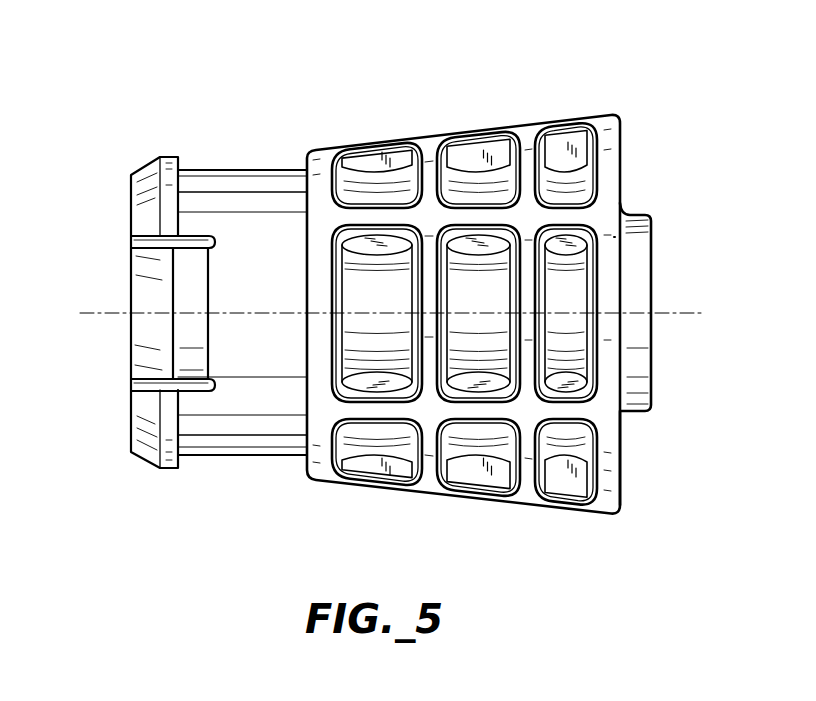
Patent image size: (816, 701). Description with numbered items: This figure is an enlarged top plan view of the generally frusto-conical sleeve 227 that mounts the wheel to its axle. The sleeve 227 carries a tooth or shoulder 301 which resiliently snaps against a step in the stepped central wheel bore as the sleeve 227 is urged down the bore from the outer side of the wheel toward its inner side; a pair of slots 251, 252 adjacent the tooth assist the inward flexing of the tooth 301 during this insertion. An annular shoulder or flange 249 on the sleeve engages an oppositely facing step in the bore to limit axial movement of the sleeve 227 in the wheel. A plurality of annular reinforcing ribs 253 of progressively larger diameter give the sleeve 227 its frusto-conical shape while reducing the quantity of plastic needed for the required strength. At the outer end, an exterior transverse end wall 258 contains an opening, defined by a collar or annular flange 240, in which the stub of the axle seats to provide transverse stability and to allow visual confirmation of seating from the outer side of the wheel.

The sleeve 227 is at (207, 498).
The collar or annular flange 240 is at (633, 213).
The annular shoulder or flange 249 is at (315, 347).
The slot 251 is at (153, 387).
The slot 252 is at (152, 240).
The annular reinforcing ribs 253 is at (428, 153).
The exterior transverse end wall 258 is at (623, 440).
The tooth or shoulder 301 is at (183, 305).